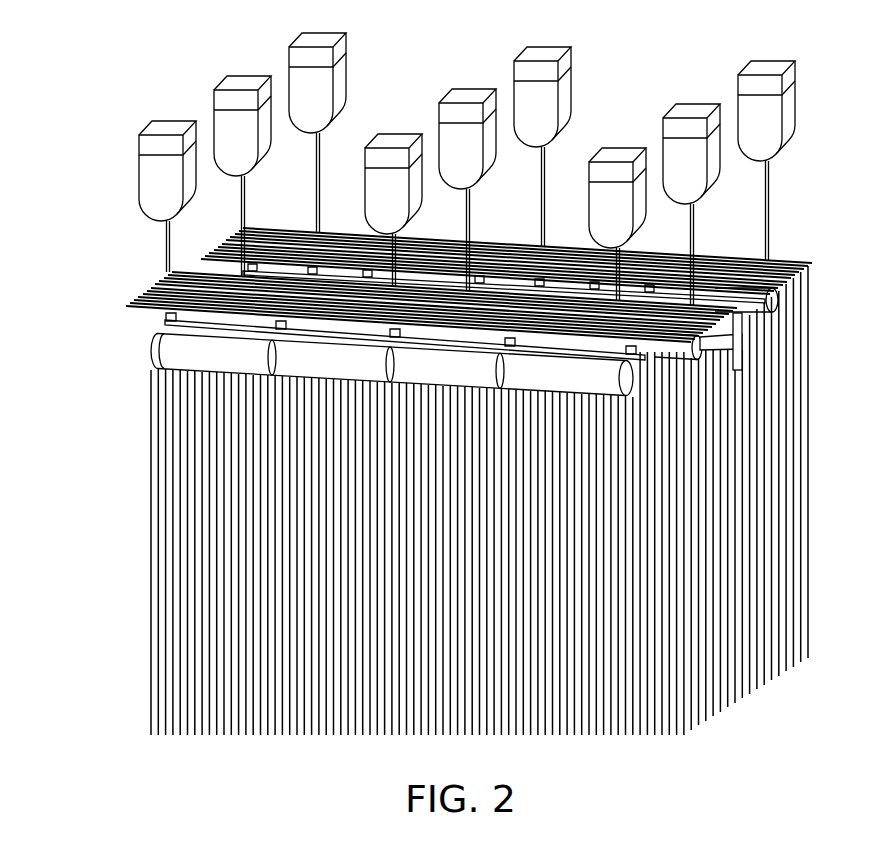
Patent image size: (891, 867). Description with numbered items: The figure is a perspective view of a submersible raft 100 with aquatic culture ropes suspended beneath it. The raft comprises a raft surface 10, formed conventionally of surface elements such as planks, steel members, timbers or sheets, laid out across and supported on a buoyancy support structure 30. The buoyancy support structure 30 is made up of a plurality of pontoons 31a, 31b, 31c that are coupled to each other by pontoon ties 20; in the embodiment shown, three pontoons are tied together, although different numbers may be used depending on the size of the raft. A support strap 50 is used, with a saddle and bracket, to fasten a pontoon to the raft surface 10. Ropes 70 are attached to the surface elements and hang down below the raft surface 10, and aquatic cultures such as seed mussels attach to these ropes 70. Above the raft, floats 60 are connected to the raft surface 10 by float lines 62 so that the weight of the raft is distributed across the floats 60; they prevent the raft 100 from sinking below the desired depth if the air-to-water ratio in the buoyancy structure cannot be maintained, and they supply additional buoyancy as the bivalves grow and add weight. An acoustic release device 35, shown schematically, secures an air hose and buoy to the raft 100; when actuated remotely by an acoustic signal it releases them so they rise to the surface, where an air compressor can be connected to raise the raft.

The submersible raft 100 is at (113, 73).
The raft surface 10 is at (530, 262).
The pontoon ties 20 is at (275, 331).
The buoyancy support structure 30 is at (99, 319).
The pontoon 31a is at (633, 381).
The pontoon 31b is at (722, 338).
The pontoon 31c is at (778, 300).
The acoustic release device 35 is at (740, 352).
The support strap 50 is at (150, 368).
The floats 60 is at (686, 108).
The float lines 62 is at (772, 205).
The ropes 70 is at (158, 540).